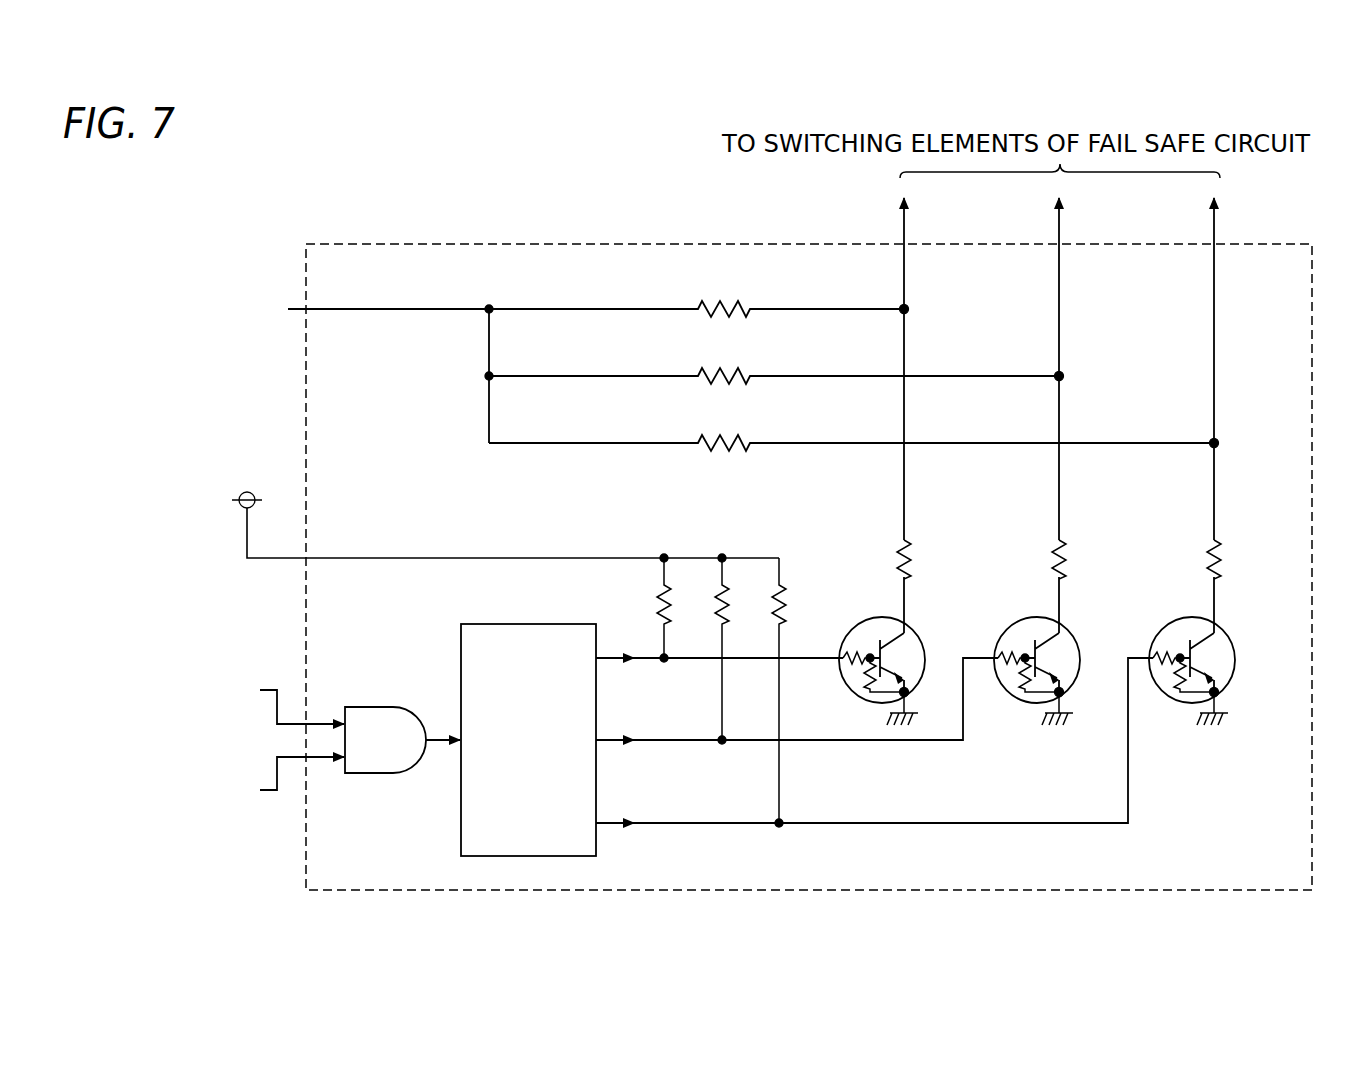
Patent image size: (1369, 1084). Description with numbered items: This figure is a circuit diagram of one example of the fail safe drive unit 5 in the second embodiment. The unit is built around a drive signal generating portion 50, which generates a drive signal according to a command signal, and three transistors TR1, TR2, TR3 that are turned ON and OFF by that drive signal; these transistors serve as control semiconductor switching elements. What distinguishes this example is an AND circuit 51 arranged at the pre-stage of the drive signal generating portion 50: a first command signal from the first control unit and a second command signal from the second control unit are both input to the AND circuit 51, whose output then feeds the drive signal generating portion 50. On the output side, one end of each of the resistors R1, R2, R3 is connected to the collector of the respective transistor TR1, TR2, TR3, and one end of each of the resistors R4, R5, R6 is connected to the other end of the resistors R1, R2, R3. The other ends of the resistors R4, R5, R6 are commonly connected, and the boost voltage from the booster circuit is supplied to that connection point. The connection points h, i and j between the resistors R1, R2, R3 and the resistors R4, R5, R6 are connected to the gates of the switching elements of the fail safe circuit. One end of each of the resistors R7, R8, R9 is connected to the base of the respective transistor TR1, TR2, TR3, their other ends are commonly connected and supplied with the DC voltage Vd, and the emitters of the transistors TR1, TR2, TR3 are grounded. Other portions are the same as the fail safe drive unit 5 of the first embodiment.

The fail safe drive unit 5 is at (804, 244).
The drive signal generating portion 50 is at (525, 624).
The AND circuit 51 is at (380, 707).
The resistor R1 is at (887, 559).
The resistor R2 is at (1042, 559).
The resistor R3 is at (1197, 559).
The resistor R4 is at (696, 295).
The resistor R5 is at (774, 362).
The resistor R6 is at (851, 429).
The resistor R7 is at (647, 610).
The resistor R8 is at (707, 651).
The resistor R9 is at (763, 692).
The transistor TR1 is at (896, 665).
The transistor TR2 is at (1052, 665).
The transistor TR3 is at (1207, 665).